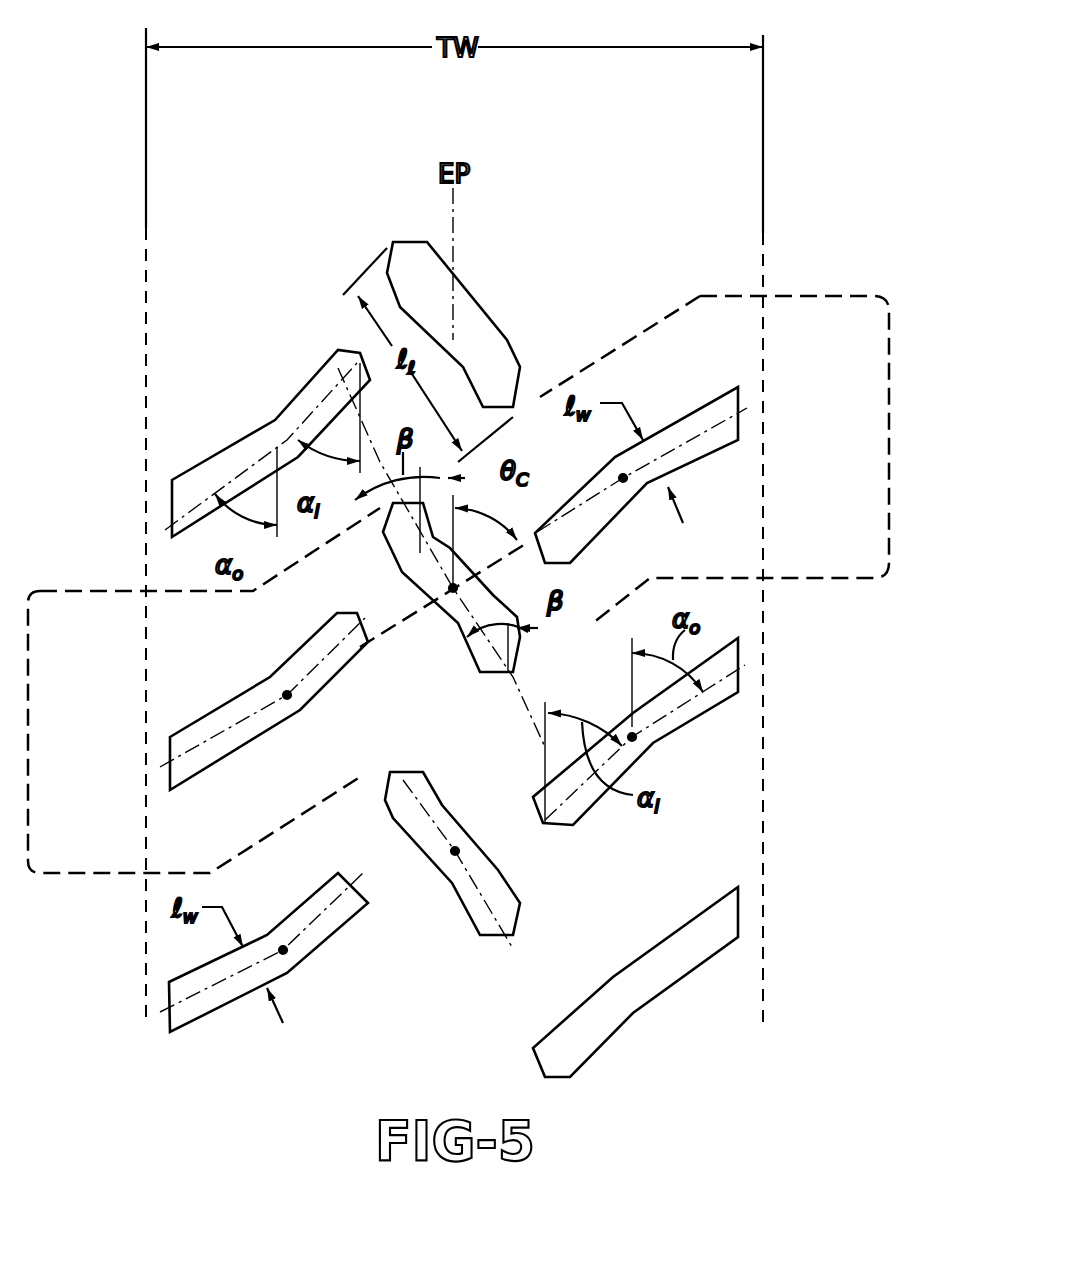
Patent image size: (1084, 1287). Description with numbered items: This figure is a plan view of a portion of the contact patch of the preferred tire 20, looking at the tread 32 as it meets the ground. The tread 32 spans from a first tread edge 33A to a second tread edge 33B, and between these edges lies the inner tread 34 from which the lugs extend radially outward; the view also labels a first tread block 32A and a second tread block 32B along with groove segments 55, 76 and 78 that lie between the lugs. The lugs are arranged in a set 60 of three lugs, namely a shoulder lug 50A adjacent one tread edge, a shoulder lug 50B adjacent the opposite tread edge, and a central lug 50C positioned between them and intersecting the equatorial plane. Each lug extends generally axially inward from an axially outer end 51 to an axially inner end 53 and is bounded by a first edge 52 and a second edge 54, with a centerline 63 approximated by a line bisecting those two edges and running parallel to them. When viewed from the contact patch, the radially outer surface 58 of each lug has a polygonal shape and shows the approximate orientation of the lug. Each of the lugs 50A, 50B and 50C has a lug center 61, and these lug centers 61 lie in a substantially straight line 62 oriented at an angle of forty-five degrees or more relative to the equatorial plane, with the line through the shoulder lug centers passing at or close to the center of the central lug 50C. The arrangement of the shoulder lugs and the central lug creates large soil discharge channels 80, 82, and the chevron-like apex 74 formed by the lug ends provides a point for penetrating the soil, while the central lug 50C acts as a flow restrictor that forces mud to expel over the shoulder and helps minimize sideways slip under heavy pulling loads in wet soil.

The tire 20 is at (123, 143).
The tread 32 is at (690, 565).
The first tread block 32A is at (337, 262).
The second tread block 32B is at (519, 320).
The first tread edge 33A is at (146, 202).
The second tread edge 33B is at (763, 208).
The inner tread 34 is at (707, 822).
The shoulder lug 50A is at (180, 518).
The shoulder lug 50B is at (730, 408).
The central lug 50C is at (488, 303).
The axially outer end 51 is at (350, 347).
The first edge 52 is at (450, 895).
The axially inner end 53 is at (738, 917).
The second edge 54 is at (443, 803).
The groove segment 55 is at (413, 838).
The radially outer surface 58 is at (207, 472).
The set 60 is at (85, 875).
The lug center 61 is at (450, 587).
The straight line 62 is at (328, 668).
The centerline 63 is at (685, 443).
The apex 74 is at (527, 663).
The groove segment 76 is at (363, 450).
The groove segment 78 is at (527, 703).
The soil discharge channel 80 is at (223, 628).
The soil discharge channel 82 is at (732, 785).